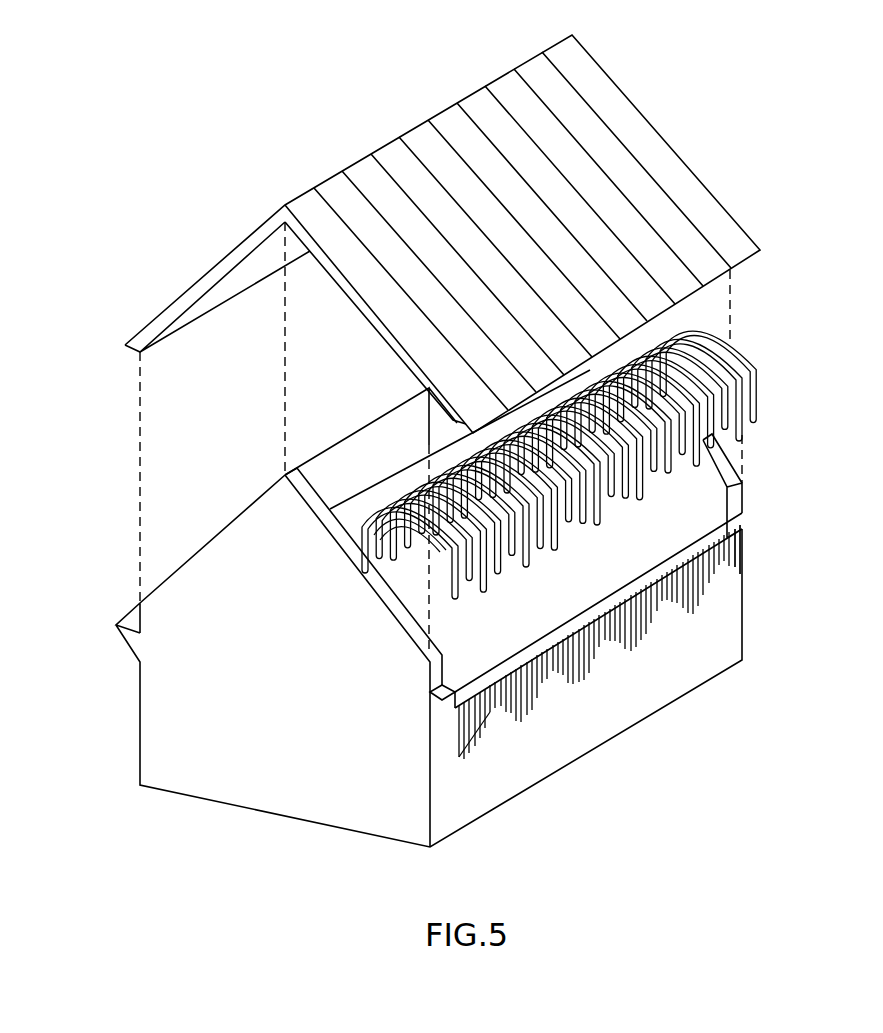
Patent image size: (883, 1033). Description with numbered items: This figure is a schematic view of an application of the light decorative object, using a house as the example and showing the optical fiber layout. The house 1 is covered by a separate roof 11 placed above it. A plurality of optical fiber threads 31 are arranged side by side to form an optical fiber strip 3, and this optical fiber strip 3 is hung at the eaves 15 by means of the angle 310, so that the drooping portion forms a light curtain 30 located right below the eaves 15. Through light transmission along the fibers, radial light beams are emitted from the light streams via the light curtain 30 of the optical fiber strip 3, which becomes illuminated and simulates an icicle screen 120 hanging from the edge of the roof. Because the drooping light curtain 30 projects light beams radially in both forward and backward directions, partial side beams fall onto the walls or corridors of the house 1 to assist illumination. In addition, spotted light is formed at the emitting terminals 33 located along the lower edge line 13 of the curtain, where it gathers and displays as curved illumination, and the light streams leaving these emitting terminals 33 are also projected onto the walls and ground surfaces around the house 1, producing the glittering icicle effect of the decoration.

The house 1 is at (155, 718).
The roof 11 is at (201, 281).
The optical fiber strip 3 is at (707, 360).
The light curtain 30 is at (757, 395).
The optical fiber threads 31 is at (413, 520).
The angle 310 is at (455, 553).
The emitting terminals 33 is at (442, 658).
The eaves 15 is at (748, 518).
The lower edge line 13 is at (552, 733).
The icicle screen 120 is at (485, 713).